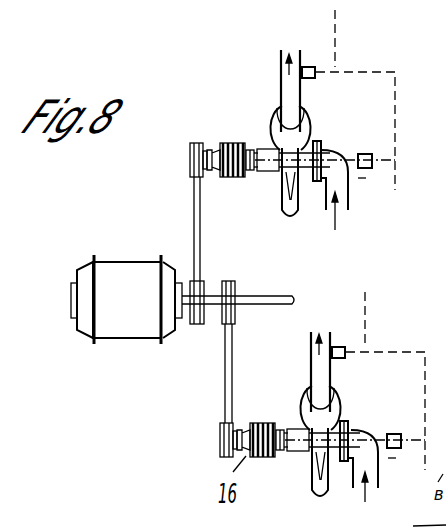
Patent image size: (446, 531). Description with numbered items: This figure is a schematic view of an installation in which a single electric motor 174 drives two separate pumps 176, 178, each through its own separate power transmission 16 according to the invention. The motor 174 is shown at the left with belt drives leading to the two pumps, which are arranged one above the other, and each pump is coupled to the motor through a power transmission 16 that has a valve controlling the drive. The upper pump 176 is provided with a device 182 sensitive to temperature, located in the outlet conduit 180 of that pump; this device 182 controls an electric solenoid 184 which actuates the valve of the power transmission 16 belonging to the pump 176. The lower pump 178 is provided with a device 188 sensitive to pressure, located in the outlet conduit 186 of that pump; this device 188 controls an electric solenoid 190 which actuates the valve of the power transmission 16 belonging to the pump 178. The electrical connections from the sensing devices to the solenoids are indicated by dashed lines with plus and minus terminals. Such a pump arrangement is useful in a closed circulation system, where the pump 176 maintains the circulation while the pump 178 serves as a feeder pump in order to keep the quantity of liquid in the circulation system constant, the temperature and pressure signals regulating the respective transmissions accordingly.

The power transmission 16 is at (235, 177).
The electric motor 174 is at (113, 283).
The pump 176 is at (266, 117).
The pump 178 is at (305, 478).
The outlet conduit 180 is at (302, 97).
The temperature-sensitive device 182 is at (309, 67).
The electric solenoid 184 is at (365, 154).
The outlet conduit 186 is at (345, 372).
The pressure-sensitive device 188 is at (377, 377).
The electric solenoid 190 is at (401, 421).